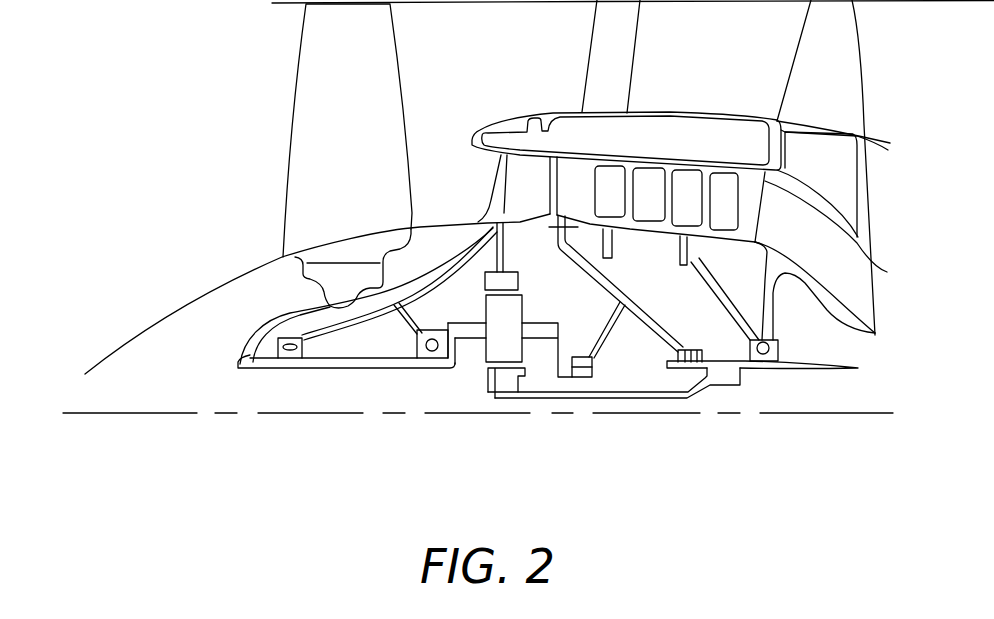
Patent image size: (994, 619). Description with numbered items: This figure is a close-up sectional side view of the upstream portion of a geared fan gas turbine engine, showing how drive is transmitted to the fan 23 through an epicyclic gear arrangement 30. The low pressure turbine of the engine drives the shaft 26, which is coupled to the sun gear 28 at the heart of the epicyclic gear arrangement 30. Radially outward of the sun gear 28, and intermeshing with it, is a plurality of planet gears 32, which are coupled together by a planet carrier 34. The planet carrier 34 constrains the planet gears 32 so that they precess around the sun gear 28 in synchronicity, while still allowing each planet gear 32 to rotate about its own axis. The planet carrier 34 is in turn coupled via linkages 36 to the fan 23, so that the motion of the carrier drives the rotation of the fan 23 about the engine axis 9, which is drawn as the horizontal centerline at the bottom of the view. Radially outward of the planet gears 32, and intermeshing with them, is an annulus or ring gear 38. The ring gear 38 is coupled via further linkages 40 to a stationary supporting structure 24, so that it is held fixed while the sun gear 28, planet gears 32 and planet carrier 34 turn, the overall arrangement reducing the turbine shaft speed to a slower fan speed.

The engine axis 9 is at (175, 415).
The fan 23 is at (322, 127).
The stationary supporting structure 24 is at (503, 180).
The shaft 26 is at (750, 370).
The sun gear 28 is at (507, 380).
The epicyclic gear arrangement 30 is at (493, 356).
The planet gears 32 is at (480, 364).
The planet carrier 34 is at (555, 353).
The linkages 36 is at (462, 357).
The ring gear 38 is at (512, 281).
The linkages 40 is at (505, 253).